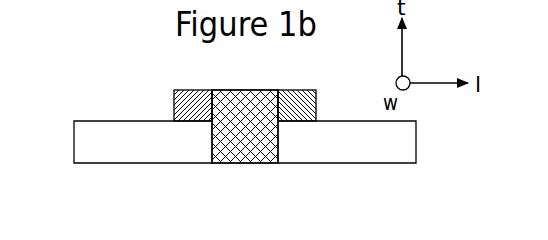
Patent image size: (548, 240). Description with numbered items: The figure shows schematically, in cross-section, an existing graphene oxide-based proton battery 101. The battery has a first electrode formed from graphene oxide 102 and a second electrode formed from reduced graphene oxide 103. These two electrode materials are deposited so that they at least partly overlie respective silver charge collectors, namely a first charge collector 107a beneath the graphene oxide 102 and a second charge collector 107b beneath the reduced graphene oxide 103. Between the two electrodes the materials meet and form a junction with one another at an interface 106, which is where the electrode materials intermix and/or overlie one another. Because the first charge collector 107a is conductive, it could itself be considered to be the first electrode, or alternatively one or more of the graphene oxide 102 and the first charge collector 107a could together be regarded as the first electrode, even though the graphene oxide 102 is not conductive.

The proton battery 101 is at (127, 77).
The graphene oxide 102 is at (192, 99).
The reduced graphene oxide 103 is at (292, 99).
The interface 106 is at (252, 160).
The first charge collector 107a is at (143, 142).
The second charge collector 107b is at (347, 142).